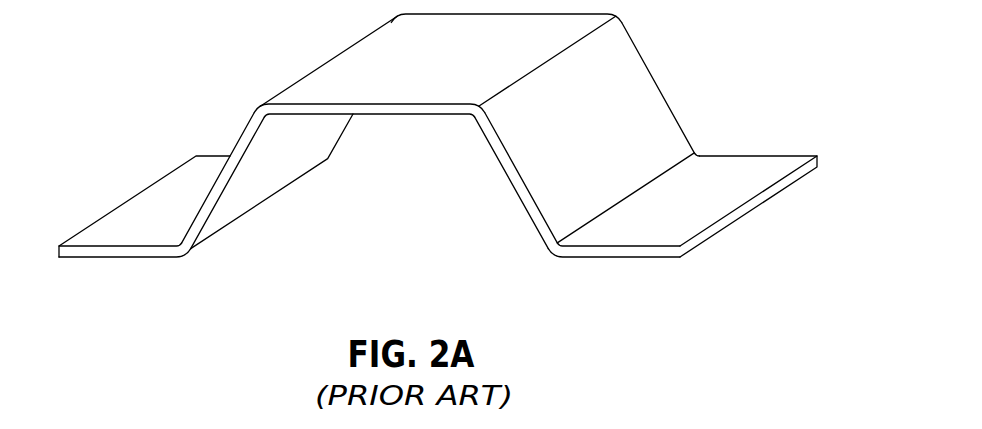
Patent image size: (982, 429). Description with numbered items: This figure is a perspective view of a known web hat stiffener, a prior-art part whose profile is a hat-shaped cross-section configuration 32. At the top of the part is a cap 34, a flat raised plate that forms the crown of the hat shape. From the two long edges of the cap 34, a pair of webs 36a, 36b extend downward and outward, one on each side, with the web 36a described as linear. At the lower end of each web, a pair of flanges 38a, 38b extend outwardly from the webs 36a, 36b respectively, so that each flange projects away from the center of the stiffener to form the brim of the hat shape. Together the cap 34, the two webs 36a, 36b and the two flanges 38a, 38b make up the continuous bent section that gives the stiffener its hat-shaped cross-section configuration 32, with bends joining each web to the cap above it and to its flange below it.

The hat-shaped cross-section configuration 32 is at (438, 136).
The cap 34 is at (452, 74).
The web 36a is at (297, 165).
The web 36b is at (597, 156).
The flange 38a is at (168, 233).
The flange 38b is at (690, 222).